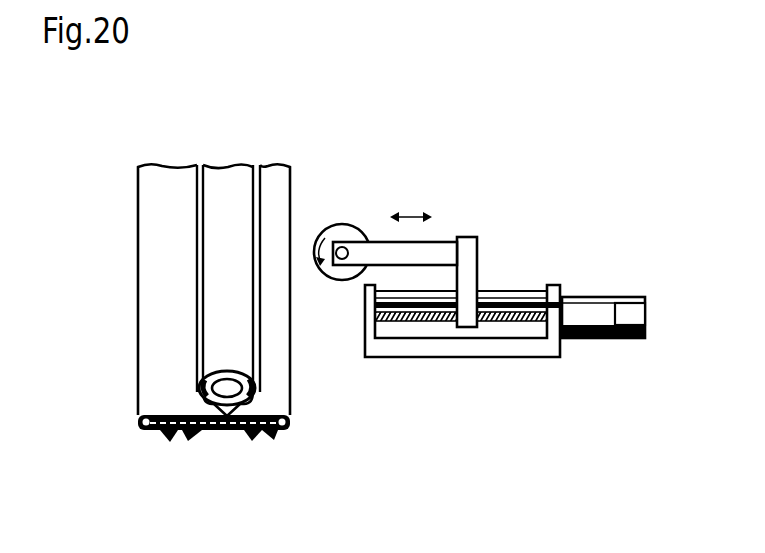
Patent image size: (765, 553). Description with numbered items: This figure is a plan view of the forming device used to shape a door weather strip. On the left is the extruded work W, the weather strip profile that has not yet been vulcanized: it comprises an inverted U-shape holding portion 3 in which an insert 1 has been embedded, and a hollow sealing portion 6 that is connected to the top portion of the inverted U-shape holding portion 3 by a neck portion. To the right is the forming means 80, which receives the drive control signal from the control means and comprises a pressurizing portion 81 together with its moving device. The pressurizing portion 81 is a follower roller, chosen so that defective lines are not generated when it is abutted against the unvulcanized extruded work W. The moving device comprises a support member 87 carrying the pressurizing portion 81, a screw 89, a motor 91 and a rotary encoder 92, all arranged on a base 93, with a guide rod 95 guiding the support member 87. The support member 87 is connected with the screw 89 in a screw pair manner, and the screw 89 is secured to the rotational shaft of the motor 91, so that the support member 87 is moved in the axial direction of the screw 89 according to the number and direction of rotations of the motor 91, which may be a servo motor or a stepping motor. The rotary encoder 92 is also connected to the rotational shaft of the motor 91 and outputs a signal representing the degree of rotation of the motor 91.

The extruded work W is at (267, 146).
The inverted U-shape holding portion 3 is at (157, 218).
The hollow sealing portion 6 is at (217, 318).
The insert 1 is at (217, 432).
The forming means 80 is at (586, 391).
The pressurizing portion 81 is at (343, 224).
The support member 87 is at (471, 237).
The screw 89 is at (425, 324).
The motor 91 is at (568, 297).
The rotary encoder 92 is at (625, 297).
The base 93 is at (510, 358).
The guide rod 95 is at (488, 290).